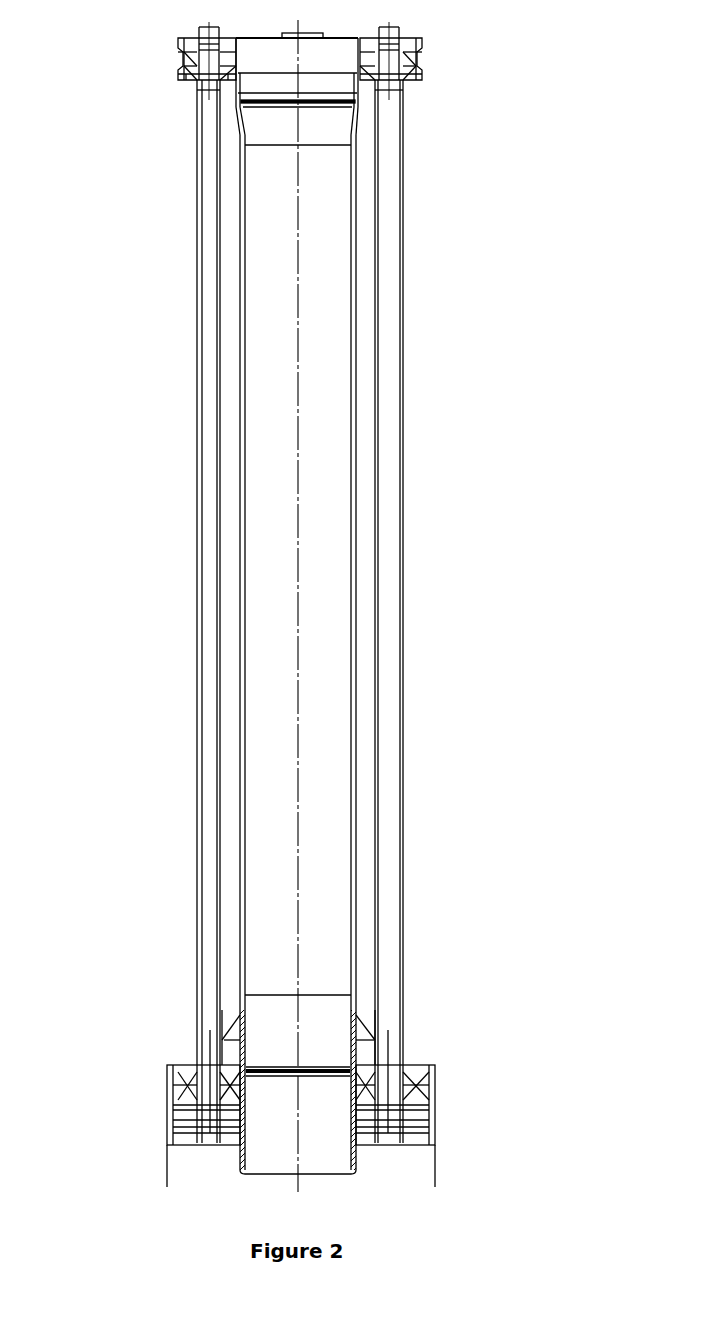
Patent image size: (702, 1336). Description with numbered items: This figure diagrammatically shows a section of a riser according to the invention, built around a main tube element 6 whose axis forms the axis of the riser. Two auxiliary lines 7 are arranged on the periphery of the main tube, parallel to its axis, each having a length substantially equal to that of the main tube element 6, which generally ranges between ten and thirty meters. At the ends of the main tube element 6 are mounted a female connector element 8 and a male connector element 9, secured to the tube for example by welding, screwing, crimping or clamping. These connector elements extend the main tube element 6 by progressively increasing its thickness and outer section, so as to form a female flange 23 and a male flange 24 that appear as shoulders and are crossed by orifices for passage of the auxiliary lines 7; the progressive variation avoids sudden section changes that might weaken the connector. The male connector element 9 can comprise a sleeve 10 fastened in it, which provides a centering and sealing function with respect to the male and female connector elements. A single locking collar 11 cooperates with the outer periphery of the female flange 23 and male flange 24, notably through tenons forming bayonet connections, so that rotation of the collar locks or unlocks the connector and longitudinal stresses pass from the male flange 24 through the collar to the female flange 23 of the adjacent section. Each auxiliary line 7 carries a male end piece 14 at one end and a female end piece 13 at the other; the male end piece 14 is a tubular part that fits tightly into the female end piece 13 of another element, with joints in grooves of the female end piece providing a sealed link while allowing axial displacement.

The main tube element 6 is at (352, 430).
The auxiliary line 7 is at (402, 468).
The female connector element 8 is at (400, 93).
The male connector element 9 is at (353, 1017).
The sleeve 10 is at (430, 1095).
The locking collar 11 is at (430, 1080).
The female end piece 13 is at (183, 73).
The male end piece 14 is at (168, 1070).
The female flange 23 is at (178, 43).
The male flange 24 is at (420, 1064).